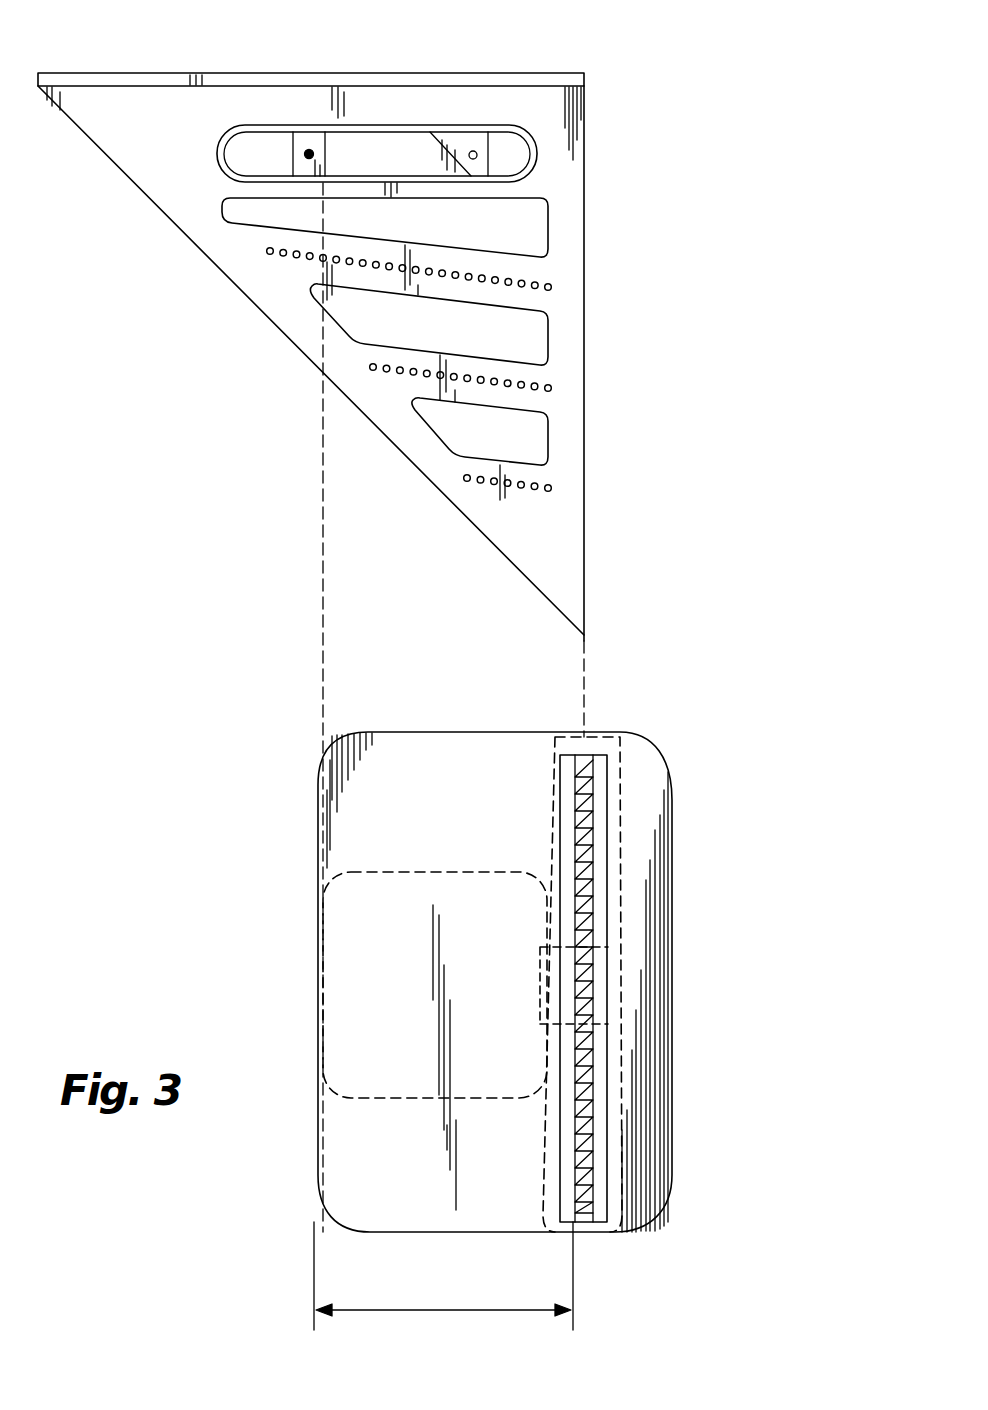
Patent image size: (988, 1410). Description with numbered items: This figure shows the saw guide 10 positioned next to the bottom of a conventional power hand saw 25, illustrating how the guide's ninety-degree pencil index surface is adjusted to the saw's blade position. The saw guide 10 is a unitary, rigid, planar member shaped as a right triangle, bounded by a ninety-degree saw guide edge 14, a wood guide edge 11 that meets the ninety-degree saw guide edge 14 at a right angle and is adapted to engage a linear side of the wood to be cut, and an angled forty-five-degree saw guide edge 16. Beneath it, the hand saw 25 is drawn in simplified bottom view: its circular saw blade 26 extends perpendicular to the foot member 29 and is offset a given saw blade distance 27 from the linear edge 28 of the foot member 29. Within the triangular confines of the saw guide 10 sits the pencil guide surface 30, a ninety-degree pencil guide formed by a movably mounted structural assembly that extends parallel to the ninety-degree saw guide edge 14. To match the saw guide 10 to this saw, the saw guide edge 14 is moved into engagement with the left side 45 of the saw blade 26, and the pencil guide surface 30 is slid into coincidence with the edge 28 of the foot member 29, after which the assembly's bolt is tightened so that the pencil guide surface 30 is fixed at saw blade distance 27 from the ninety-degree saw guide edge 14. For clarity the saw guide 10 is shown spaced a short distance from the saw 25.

The saw guide 10 is at (205, 452).
The wood guide edge 11 is at (160, 85).
The 90-degree saw guide edge 14 is at (584, 350).
The 45-degree saw guide edge 16 is at (287, 334).
The hand saw 25 is at (297, 765).
The circular saw blade 26 is at (590, 765).
The saw blade distance 27 is at (415, 1310).
The linear edge of foot member 28 is at (325, 925).
The foot member 29 is at (672, 1077).
The pencil guide surface 30 is at (328, 152).
The left side of saw blade 45 is at (577, 797).